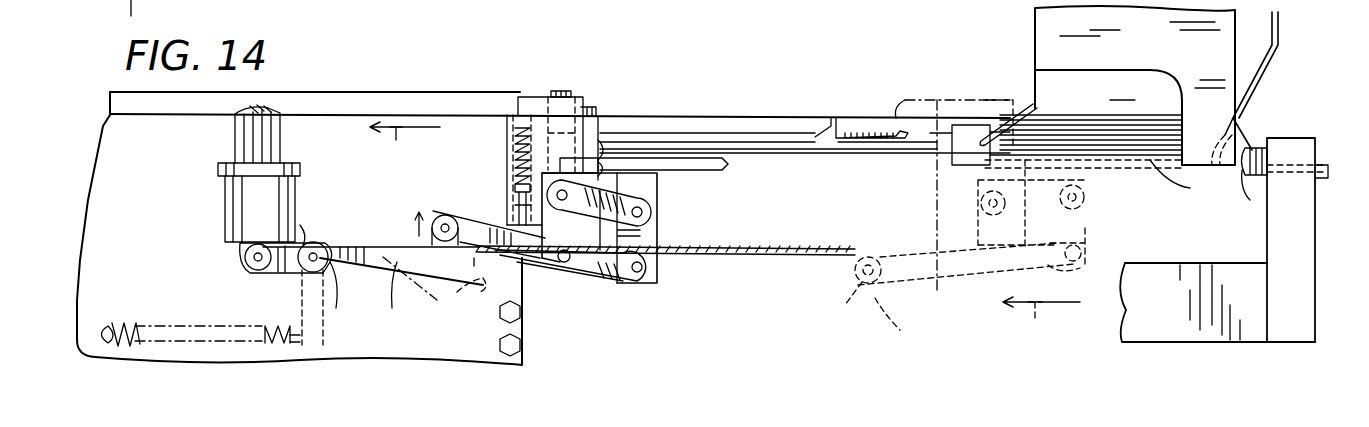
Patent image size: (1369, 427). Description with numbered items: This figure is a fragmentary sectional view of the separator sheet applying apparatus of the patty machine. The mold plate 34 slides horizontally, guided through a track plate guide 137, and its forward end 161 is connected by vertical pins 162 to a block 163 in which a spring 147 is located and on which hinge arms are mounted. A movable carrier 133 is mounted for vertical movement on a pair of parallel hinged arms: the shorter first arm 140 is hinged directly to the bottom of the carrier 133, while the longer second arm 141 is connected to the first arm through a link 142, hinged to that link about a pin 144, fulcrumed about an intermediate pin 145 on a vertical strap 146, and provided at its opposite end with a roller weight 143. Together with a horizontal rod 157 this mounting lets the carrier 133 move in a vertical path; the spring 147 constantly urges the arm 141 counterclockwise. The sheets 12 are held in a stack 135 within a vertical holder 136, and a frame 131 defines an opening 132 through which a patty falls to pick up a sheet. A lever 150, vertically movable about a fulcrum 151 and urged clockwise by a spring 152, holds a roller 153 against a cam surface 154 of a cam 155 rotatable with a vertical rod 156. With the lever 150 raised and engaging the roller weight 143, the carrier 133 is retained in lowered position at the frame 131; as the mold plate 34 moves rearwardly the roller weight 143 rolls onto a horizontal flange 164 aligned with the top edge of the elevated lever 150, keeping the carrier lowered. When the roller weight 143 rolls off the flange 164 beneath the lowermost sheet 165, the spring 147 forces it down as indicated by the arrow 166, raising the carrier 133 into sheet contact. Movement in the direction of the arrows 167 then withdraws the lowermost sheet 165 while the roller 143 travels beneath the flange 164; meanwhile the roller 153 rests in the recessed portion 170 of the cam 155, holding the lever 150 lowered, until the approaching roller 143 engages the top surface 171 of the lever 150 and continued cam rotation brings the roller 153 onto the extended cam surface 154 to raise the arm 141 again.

The paper sheet 12 is at (1150, 114).
The mold plate 34 is at (334, 100).
The frame 131 is at (812, 120).
The opening 132 is at (710, 118).
The movable carrier 133 is at (724, 166).
The stack 135 is at (1088, 109).
The vertical holder 136 is at (1150, 48).
The track plate guide 137 is at (1262, 78).
The first hinged arm 140 is at (470, 212).
The second hinged arm 141 is at (612, 275).
The link 142 is at (645, 238).
The roller weight 143 is at (649, 221).
The pin 144 is at (650, 272).
The intermediate pin 145 is at (572, 285).
The vertical strap 146 is at (560, 265).
The spring 147 is at (508, 148).
The lever 150 is at (392, 280).
The fulcrum 151 is at (330, 270).
The spring 152 is at (136, 325).
The roller 153 is at (252, 272).
The cam surface 154 is at (230, 252).
The cam 155 is at (226, 222).
The vertical rod 156 is at (245, 140).
The horizontal rod 157 is at (652, 212).
The forward end 161 is at (536, 102).
The vertical pins 162 is at (563, 90).
The block 163 is at (598, 130).
The horizontal flange 164 is at (748, 246).
The lowermost sheet 165 is at (1208, 177).
The arrow 166 is at (899, 330).
The arrows 167 is at (725, 238).
The recessed portion 170 is at (318, 242).
The top surface 171 is at (355, 246).